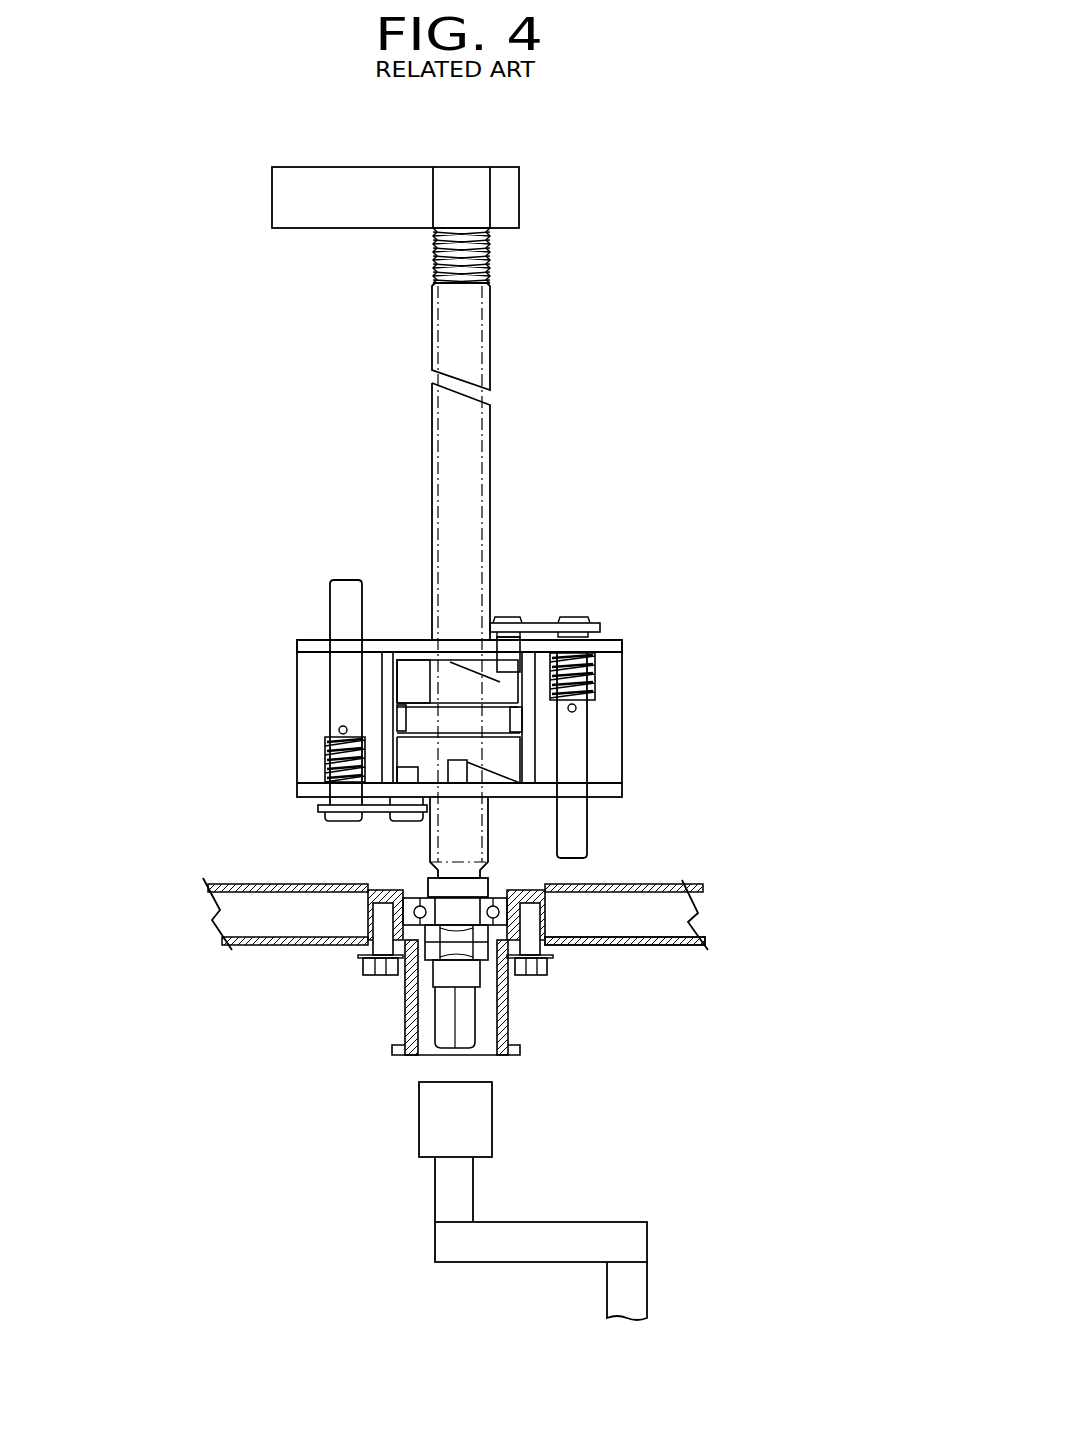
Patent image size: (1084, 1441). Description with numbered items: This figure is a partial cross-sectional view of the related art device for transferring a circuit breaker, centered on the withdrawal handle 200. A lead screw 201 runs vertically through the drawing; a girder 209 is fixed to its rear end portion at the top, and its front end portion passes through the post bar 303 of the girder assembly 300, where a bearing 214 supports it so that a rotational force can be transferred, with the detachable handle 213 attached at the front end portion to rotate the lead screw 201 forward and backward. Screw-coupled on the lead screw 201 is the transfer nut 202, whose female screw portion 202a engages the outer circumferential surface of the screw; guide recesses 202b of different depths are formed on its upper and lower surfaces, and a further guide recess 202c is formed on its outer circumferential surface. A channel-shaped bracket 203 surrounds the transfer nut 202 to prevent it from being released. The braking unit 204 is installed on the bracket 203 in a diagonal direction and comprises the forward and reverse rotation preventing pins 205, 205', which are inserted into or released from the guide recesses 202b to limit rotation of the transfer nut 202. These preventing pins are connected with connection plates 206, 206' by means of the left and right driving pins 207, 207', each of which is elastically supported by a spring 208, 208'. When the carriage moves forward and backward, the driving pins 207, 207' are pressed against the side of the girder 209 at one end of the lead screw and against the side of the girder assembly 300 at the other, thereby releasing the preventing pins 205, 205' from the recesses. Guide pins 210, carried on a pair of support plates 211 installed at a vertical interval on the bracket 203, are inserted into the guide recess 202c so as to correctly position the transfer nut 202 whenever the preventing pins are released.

The withdrawal handle 200 is at (686, 495).
The lead screw 201 is at (478, 452).
The transfer nut 202 is at (413, 672).
The female screw portion 202a is at (420, 820).
The guide recesses 202b is at (475, 667).
The guide recess 202c is at (422, 713).
The channel-shaped bracket 203 is at (612, 647).
The braking unit 204 is at (562, 603).
The forward rotation preventing pin 205 is at (378, 823).
The reverse rotation preventing pin 205' is at (531, 611).
The connection plate 206 is at (337, 830).
The connection plate 206' is at (576, 603).
The left driving pin 207 is at (306, 700).
The right driving pin 207' is at (631, 755).
The spring 208 is at (290, 759).
The spring 208' is at (627, 676).
The girder 209 is at (350, 175).
The guide pins 210 is at (397, 720).
The support plate 211 is at (383, 668).
The handle 213 is at (438, 1195).
The bearing 214 is at (528, 972).
The girder assembly 300 is at (677, 958).
The post bar 303 is at (630, 945).